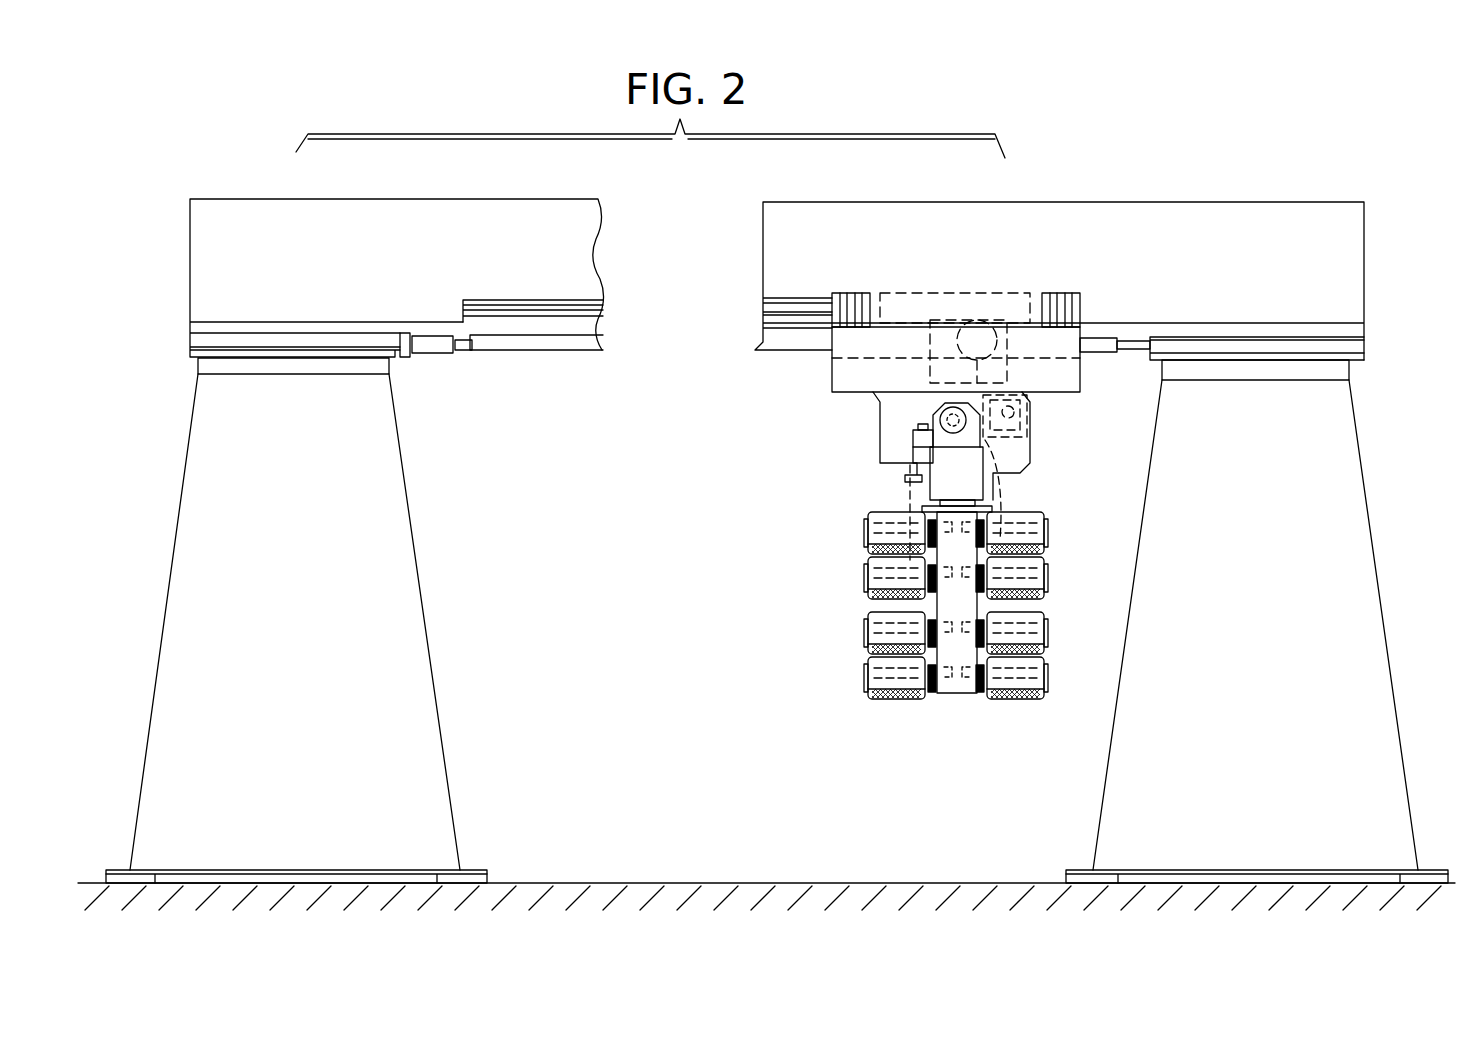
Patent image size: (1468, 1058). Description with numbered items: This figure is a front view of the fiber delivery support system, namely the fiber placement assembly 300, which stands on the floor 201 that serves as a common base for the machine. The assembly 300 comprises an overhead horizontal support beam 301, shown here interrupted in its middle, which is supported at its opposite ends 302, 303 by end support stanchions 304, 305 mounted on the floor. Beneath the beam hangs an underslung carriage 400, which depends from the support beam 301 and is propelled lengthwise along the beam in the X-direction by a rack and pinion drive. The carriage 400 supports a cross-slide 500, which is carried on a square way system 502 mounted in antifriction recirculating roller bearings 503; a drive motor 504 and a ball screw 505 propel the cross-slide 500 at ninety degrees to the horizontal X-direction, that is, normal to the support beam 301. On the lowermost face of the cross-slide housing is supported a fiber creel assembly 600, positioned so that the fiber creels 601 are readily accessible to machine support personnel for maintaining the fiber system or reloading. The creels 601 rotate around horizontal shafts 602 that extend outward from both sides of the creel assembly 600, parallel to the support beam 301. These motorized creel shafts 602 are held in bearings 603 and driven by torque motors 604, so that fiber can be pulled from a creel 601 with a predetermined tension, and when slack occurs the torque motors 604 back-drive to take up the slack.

The floor 201 is at (538, 883).
The fiber placement assembly 300 is at (1108, 257).
The overhead horizontal support beam 301 is at (1215, 276).
The end of support beam 302 is at (1365, 318).
The end of support beam 303 is at (190, 304).
The end support stanchion 304 is at (1278, 442).
The end support stanchion 305 is at (312, 441).
The underslung carriage 400 is at (752, 376).
The cross-slide 500 is at (978, 489).
The square way system 502 is at (913, 463).
The antifriction recirculating roller bearings 503 is at (913, 438).
The drive motor 504 is at (1027, 434).
The ball screw 505 is at (1010, 445).
The fiber creel assembly 600 is at (917, 629).
The fiber creel 601 is at (882, 700).
The horizontal shaft 602 is at (880, 663).
The bearing 603 is at (928, 592).
The torque motor 604 is at (922, 548).